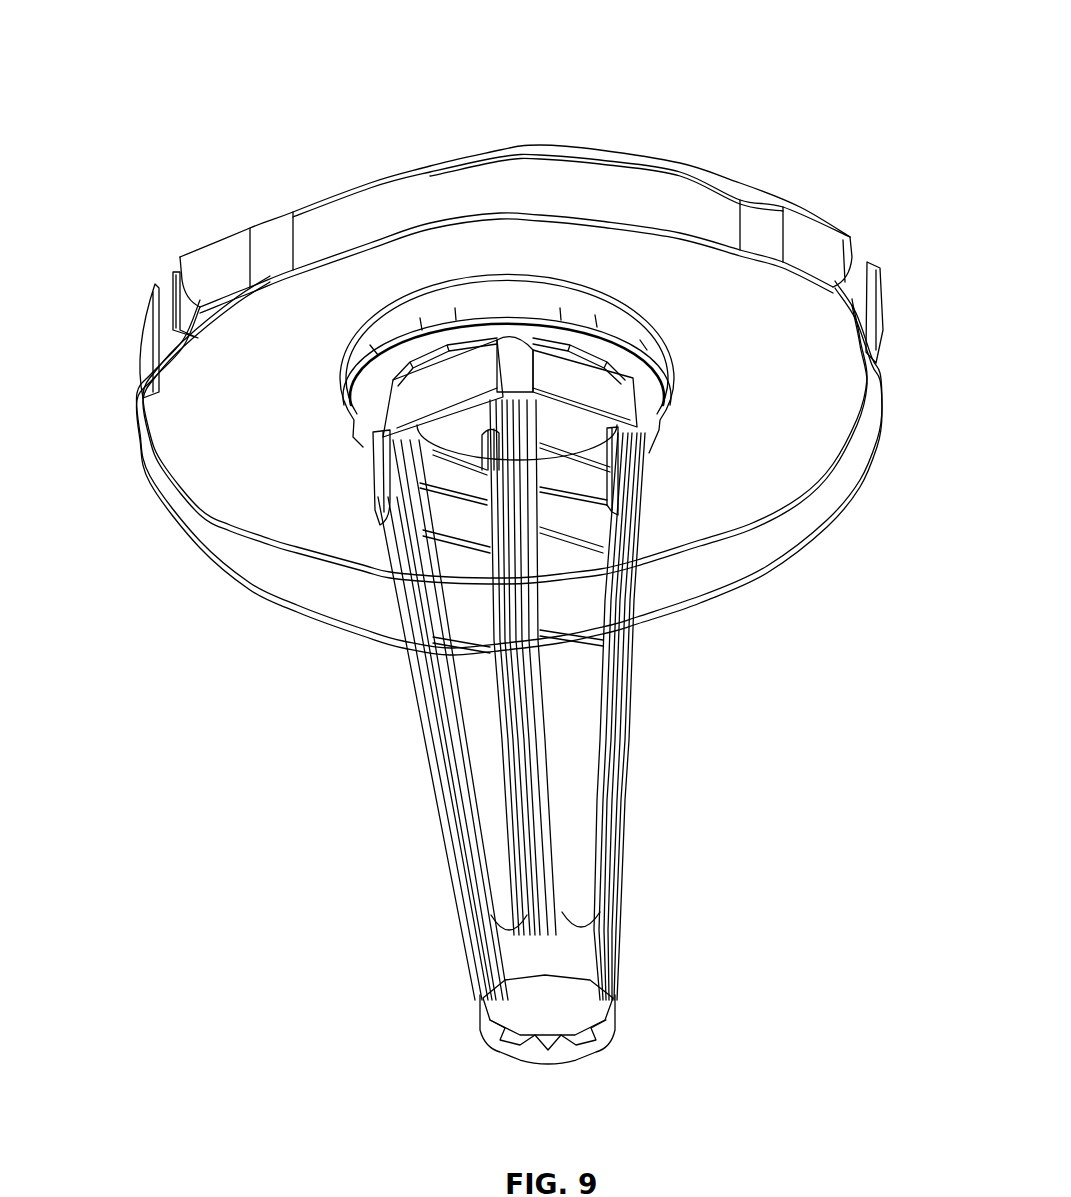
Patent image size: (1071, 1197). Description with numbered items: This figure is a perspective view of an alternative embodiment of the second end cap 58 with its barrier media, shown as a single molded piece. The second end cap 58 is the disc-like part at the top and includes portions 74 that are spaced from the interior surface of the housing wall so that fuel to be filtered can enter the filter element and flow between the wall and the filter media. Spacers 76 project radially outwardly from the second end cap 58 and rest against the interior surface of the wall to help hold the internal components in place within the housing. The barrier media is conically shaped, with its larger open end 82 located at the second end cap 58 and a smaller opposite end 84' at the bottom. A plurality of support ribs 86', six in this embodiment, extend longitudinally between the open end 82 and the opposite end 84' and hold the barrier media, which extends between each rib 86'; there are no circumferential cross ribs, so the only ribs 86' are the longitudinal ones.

The second end cap 58 is at (799, 63).
The portions spaced from the interior surface 74 is at (608, 174).
The spacers 76 is at (170, 276).
The open end 82 is at (427, 473).
The support ribs 86' is at (524, 700).
The opposite end 84' is at (548, 1043).